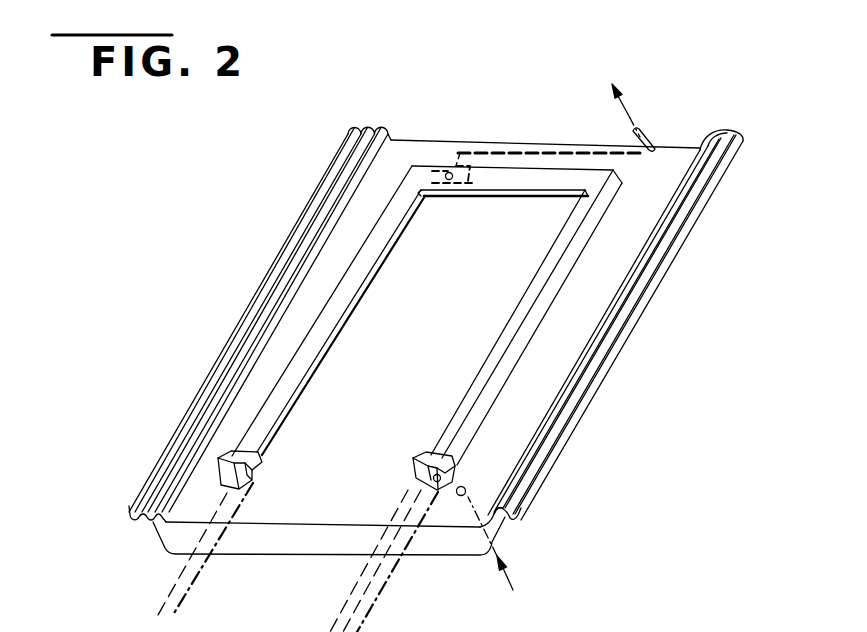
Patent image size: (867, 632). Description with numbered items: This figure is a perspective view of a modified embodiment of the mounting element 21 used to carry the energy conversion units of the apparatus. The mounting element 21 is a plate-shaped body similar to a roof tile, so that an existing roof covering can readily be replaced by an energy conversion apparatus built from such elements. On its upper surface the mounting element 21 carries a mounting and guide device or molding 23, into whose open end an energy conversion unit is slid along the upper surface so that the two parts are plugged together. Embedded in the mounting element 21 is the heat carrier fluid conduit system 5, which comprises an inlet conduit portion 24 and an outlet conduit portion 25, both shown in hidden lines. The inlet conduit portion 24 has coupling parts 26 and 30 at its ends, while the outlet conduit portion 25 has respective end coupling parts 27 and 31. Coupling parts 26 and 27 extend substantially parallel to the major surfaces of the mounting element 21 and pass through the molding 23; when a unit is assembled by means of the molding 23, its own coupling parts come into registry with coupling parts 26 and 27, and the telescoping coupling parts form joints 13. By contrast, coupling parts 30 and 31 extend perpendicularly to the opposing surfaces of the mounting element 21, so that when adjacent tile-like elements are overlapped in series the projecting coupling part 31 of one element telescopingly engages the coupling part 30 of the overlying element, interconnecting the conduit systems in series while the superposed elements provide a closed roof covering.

The heat carrier fluid conduit system 5 is at (470, 493).
The joints 13 is at (455, 470).
The mounting element 21 is at (569, 337).
The mounting and guide device 23 is at (416, 189).
The inlet conduit portion 24 is at (466, 486).
The outlet conduit portion 25 is at (548, 150).
The coupling part 26 is at (441, 486).
The coupling part 27 is at (462, 162).
The coupling part 30 is at (508, 521).
The coupling part 31 is at (653, 145).